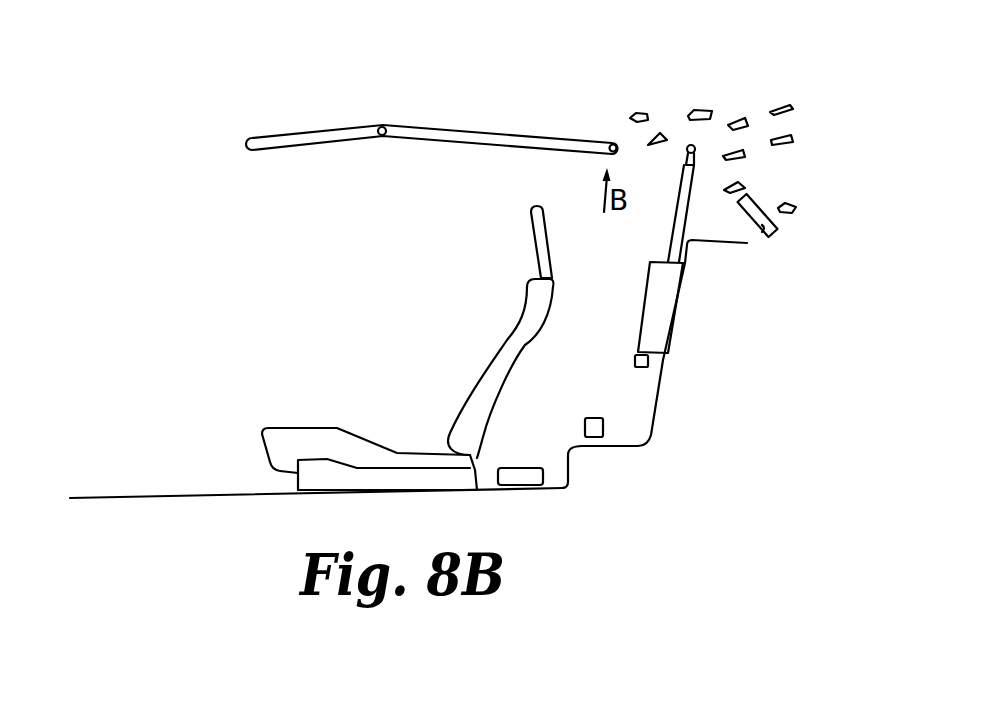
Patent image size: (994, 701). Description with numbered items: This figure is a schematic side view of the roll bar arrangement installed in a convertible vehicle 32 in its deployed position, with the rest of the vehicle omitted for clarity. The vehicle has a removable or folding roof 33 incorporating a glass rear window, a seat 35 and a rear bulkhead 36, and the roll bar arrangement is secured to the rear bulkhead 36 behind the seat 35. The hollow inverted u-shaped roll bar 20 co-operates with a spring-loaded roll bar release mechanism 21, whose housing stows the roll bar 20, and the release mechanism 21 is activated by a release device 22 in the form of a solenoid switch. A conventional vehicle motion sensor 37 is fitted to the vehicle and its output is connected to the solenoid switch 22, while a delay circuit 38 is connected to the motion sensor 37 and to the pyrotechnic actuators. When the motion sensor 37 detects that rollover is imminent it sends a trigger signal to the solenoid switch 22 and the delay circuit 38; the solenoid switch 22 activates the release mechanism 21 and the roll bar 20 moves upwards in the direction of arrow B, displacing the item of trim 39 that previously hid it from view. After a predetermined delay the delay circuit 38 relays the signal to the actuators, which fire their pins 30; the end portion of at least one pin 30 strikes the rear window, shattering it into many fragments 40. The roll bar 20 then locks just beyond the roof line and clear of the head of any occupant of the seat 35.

The roll bar 20 is at (677, 210).
The roll bar release mechanism 21 is at (636, 322).
The release device 22 is at (637, 367).
The deployable pin 30 is at (688, 145).
The convertible vehicle 32 is at (138, 315).
The roof 33 is at (448, 104).
The seat 35 is at (488, 378).
The rear bulkhead 36 is at (658, 402).
The vehicle motion sensor 37 is at (516, 470).
The delay circuit 38 is at (597, 437).
The item of trim 39 is at (760, 234).
The fragments 40 is at (742, 94).